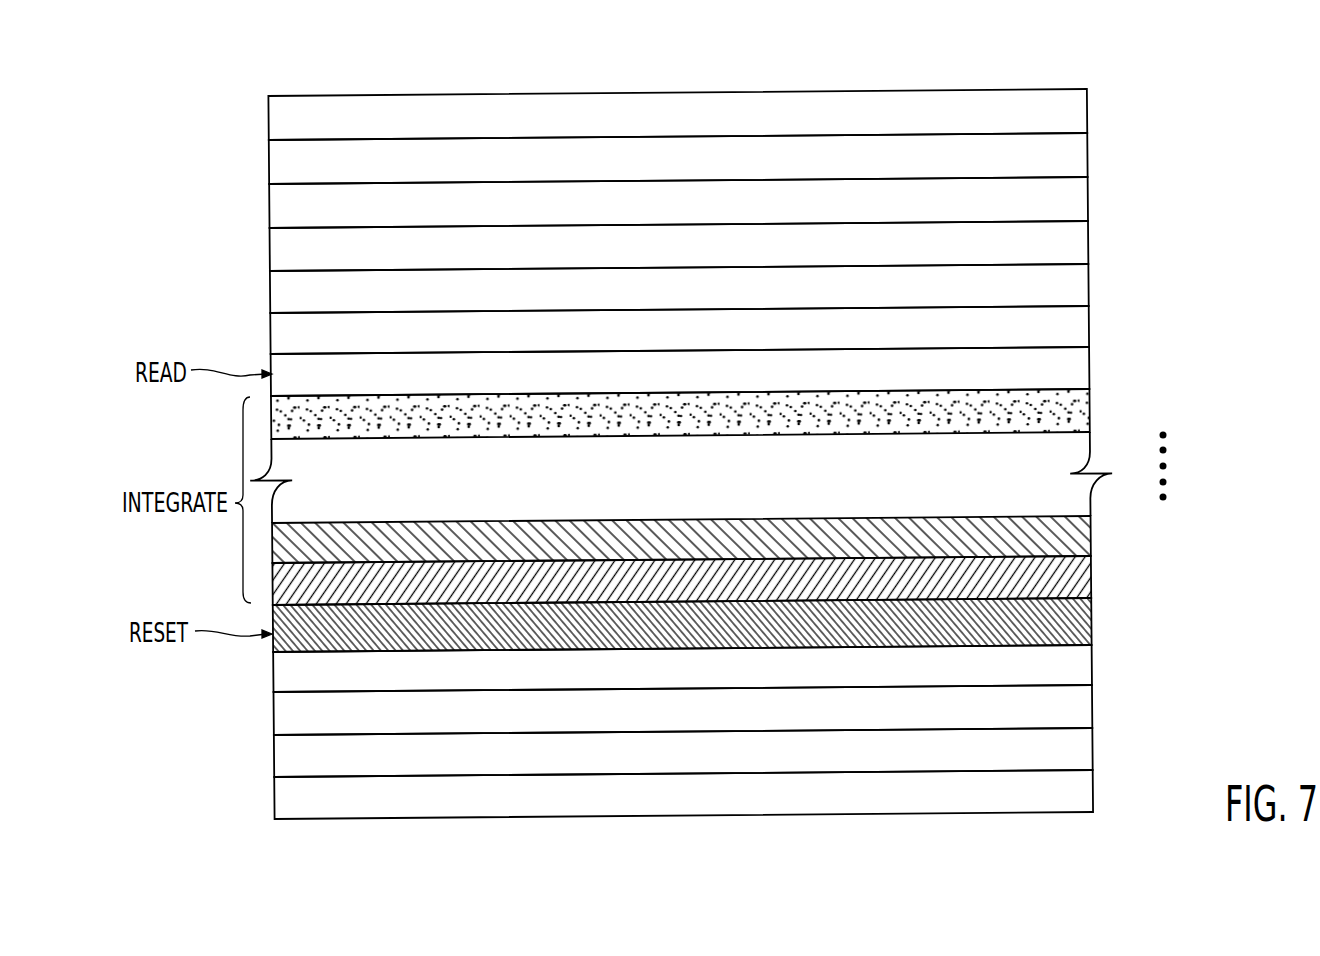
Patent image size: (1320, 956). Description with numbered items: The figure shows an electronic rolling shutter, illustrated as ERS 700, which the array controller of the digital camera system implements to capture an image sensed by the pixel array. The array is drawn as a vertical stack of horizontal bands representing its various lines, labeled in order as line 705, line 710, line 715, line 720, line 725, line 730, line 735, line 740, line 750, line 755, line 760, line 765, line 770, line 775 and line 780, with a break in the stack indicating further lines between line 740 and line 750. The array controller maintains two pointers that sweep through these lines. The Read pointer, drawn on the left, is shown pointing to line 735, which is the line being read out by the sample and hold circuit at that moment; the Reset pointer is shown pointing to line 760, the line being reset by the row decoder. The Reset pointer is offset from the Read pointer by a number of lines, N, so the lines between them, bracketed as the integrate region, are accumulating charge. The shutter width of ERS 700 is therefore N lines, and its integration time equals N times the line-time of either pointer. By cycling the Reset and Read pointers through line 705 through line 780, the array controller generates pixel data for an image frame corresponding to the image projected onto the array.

The ERS 700 is at (1129, 56).
The line 705 is at (1079, 117).
The line 710 is at (1079, 159).
The line 715 is at (1079, 202).
The line 720 is at (1079, 244).
The line 725 is at (1079, 287).
The line 730 is at (1079, 328).
The line 735 is at (1079, 369).
The line 740 is at (1079, 412).
The line 750 is at (1082, 534).
The line 755 is at (1082, 576).
The line 760 is at (1082, 619).
The line 765 is at (1082, 660).
The line 770 is at (1082, 702).
The line 775 is at (1082, 745).
The line 780 is at (1082, 787).